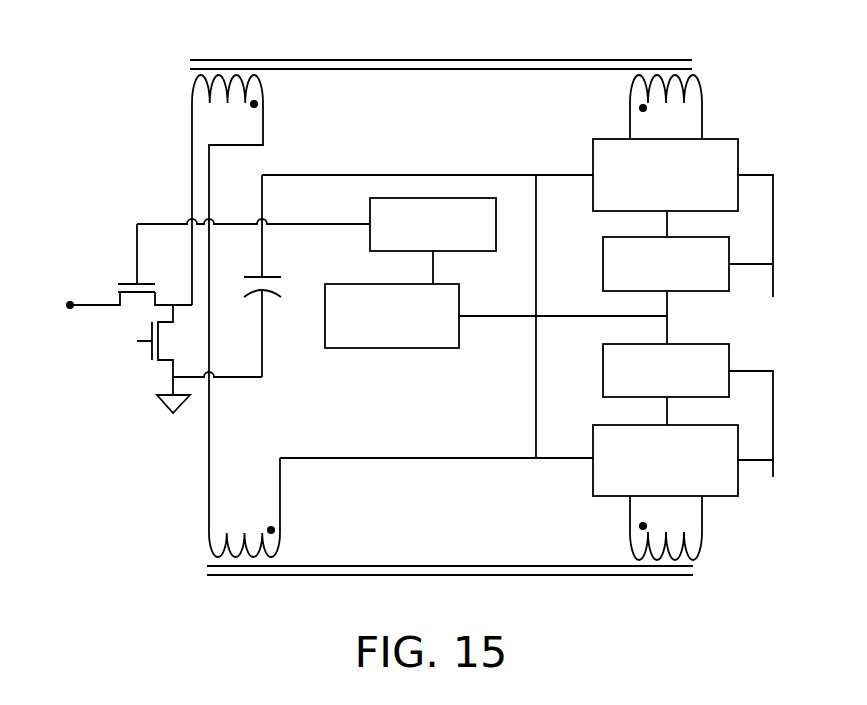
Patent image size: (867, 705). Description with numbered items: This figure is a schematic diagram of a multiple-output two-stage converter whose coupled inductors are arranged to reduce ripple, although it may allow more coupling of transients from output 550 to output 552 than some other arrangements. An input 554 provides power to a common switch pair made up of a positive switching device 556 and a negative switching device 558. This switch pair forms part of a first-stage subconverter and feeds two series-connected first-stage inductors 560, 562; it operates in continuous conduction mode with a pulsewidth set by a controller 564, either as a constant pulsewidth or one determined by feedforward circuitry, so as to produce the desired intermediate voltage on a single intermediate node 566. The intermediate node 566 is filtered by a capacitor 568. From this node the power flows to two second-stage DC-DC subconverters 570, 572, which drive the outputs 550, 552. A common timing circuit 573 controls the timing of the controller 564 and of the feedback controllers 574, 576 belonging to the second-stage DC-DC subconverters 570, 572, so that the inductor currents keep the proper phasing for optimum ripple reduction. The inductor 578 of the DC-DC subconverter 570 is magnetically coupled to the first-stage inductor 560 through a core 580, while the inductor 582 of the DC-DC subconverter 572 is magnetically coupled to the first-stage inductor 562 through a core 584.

The output 550 is at (761, 255).
The output 552 is at (764, 437).
The input 554 is at (46, 305).
The positive switching device 556 is at (128, 283).
The negative switching device 558 is at (150, 354).
The first-stage inductor 560 is at (258, 82).
The first-stage inductor 562 is at (215, 537).
The controller 564 is at (433, 224).
The intermediate node 566 is at (325, 457).
The capacitor 568 is at (256, 288).
The second-stage DC-DC subconverter 570 is at (728, 173).
The second-stage DC-DC subconverter 572 is at (718, 485).
The common timing circuit 573 is at (440, 328).
The feedback controller 574 is at (725, 249).
The feedback controller 576 is at (728, 397).
The inductor 578 is at (703, 92).
The core 580 is at (465, 75).
The inductor 582 is at (703, 540).
The core 584 is at (343, 566).